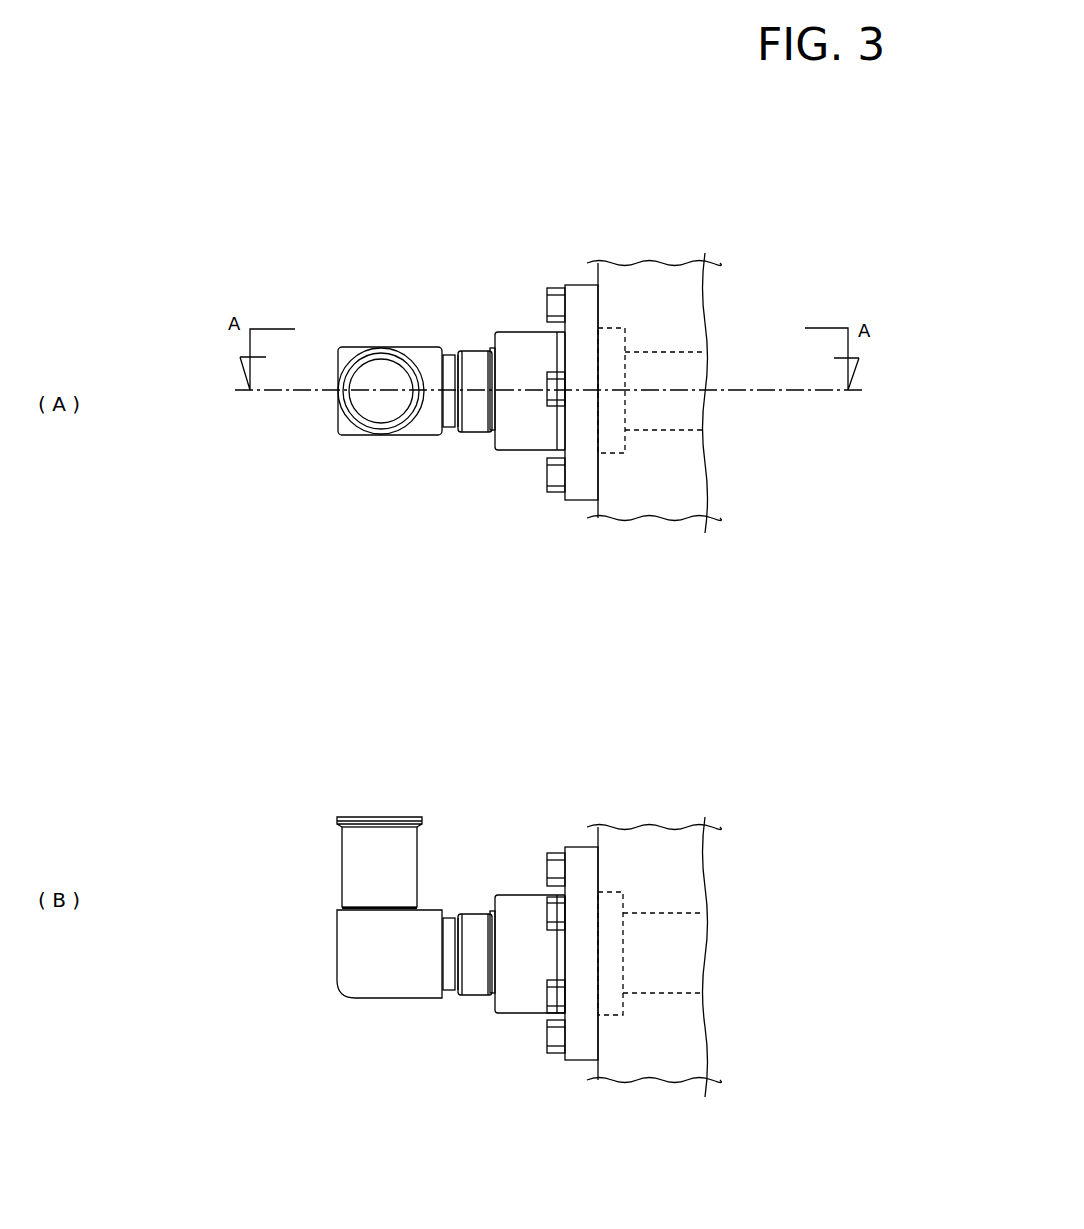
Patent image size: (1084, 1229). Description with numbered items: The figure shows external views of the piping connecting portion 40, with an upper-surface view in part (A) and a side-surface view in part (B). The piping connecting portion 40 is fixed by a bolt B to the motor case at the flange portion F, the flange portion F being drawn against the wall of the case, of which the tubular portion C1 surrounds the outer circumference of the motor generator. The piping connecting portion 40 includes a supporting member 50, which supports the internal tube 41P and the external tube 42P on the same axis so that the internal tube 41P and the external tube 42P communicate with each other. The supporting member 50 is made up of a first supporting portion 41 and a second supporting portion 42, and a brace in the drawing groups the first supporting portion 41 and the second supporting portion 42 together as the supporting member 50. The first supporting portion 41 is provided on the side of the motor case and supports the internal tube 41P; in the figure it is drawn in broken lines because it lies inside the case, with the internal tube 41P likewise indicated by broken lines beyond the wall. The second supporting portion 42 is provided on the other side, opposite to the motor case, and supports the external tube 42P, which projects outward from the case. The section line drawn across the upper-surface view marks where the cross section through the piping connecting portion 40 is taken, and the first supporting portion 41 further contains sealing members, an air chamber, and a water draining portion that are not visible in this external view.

The piping connecting portion 40 is at (392, 621).
The first supporting portion 41 is at (605, 397).
The internal tube 41P is at (662, 380).
The second supporting portion 42 is at (523, 435).
The external tube 42P is at (468, 403).
The supporting member 50 is at (542, 709).
The tubular portion C1 is at (667, 295).
The flange portion F is at (577, 470).
The bolt B is at (555, 472).